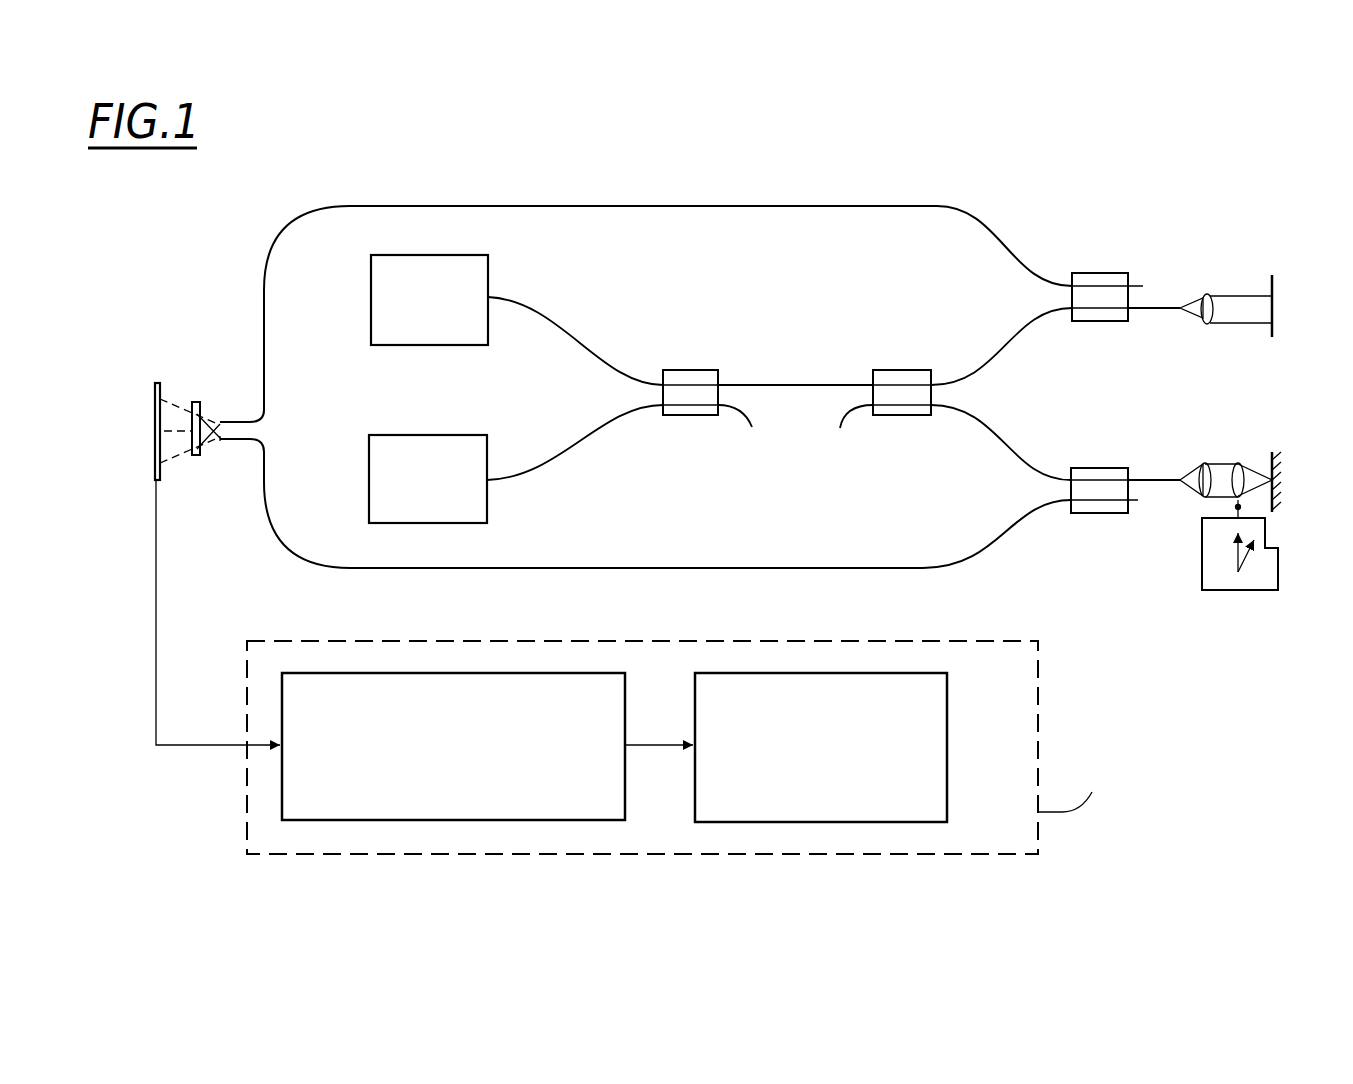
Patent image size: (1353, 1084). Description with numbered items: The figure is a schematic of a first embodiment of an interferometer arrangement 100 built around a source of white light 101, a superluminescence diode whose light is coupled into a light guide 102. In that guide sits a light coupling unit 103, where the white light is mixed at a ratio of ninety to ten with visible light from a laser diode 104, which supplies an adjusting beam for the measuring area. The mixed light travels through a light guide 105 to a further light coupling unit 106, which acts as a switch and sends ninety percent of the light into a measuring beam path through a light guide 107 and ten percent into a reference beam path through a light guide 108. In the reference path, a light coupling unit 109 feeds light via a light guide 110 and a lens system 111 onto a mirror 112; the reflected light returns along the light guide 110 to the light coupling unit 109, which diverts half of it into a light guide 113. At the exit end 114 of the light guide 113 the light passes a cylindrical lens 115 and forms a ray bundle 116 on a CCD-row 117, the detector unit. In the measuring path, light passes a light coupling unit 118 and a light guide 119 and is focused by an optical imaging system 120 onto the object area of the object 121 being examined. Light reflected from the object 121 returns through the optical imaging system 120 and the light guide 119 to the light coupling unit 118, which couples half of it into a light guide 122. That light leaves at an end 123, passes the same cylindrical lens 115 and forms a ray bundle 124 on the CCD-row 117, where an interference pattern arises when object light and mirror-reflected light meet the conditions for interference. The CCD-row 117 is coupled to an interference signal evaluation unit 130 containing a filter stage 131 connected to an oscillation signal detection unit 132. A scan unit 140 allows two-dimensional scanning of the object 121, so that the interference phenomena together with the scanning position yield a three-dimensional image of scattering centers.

The interferometer arrangement 100 is at (610, 190).
The source of white light 101 is at (427, 262).
The light guide 102 is at (577, 332).
The light coupling unit 103 is at (690, 410).
The laser diode 104 is at (413, 510).
The light guide 105 is at (783, 385).
The light coupling unit 106 is at (900, 410).
The light guide 107 is at (985, 413).
The light guide 108 is at (985, 350).
The light coupling unit 109 is at (1095, 318).
The light guide 110 is at (1153, 312).
The lens system 111 is at (1207, 295).
The mirror 112 is at (1275, 315).
The light guide 113 is at (780, 206).
The exit end 114 is at (222, 418).
The cylindrical lens 115 is at (195, 400).
The ray bundle 116 is at (172, 405).
The CCD-row 117 is at (155, 400).
The light coupling unit 118 is at (1095, 505).
The light guide 119 is at (1160, 482).
The optical imaging system 120 is at (1226, 450).
The object 121 is at (1275, 505).
The light guide 122 is at (830, 569).
The end 123 is at (215, 445).
The ray bundle 124 is at (176, 447).
The interference signal evaluation unit 130 is at (670, 840).
The filter stage 131 is at (410, 810).
The oscillation signal detection unit 132 is at (898, 812).
The scan unit 140 is at (1222, 580).